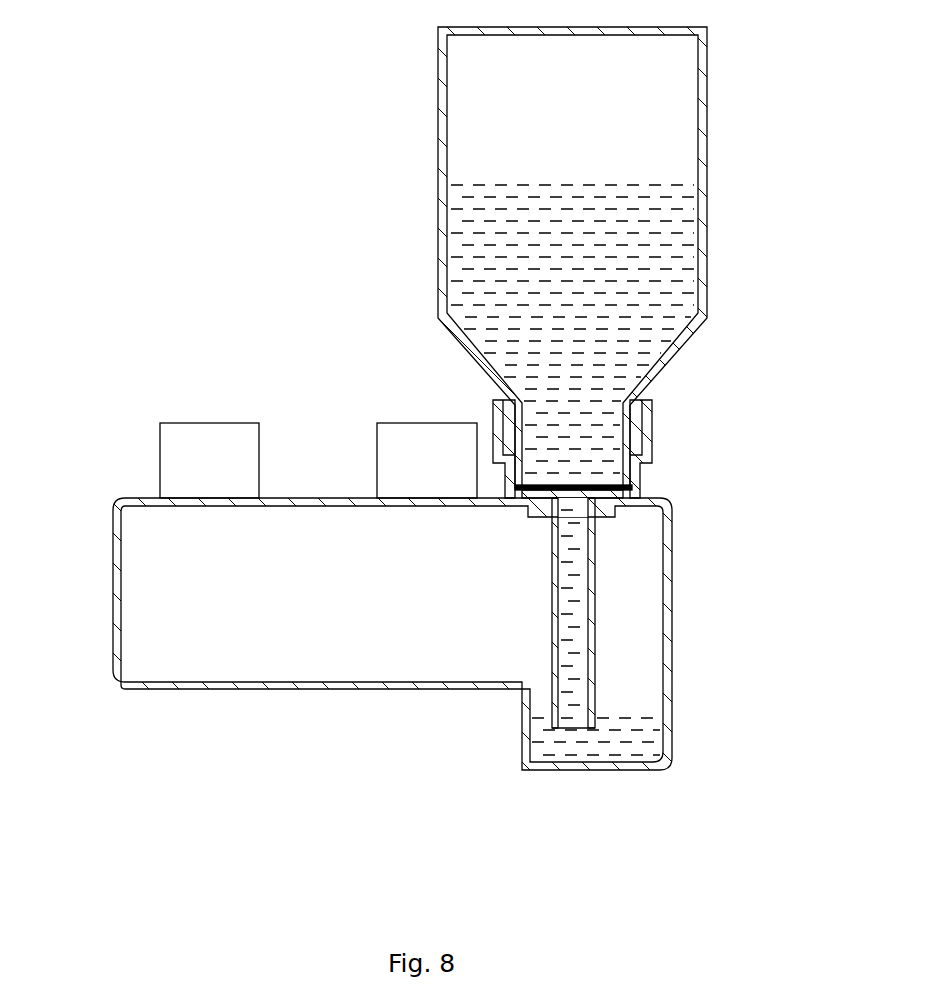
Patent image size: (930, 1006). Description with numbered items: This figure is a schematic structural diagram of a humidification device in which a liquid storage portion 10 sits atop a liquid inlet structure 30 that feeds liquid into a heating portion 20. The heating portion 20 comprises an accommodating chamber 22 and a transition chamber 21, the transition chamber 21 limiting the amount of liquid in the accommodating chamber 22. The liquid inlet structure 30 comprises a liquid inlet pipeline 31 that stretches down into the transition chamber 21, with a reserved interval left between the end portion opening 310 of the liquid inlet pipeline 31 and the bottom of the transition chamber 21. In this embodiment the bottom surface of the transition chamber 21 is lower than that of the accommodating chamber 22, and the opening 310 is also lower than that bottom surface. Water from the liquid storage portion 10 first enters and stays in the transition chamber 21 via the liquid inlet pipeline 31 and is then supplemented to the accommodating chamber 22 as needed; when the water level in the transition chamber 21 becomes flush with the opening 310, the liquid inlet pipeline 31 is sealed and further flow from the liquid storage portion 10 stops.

The liquid storage portion 10 is at (678, 110).
The liquid inlet structure 30 is at (643, 428).
The heating portion 20 is at (715, 514).
The transition chamber 21 is at (637, 688).
The accommodating chamber 22 is at (148, 525).
The liquid inlet pipeline 31 is at (572, 603).
The opening 310 is at (557, 715).